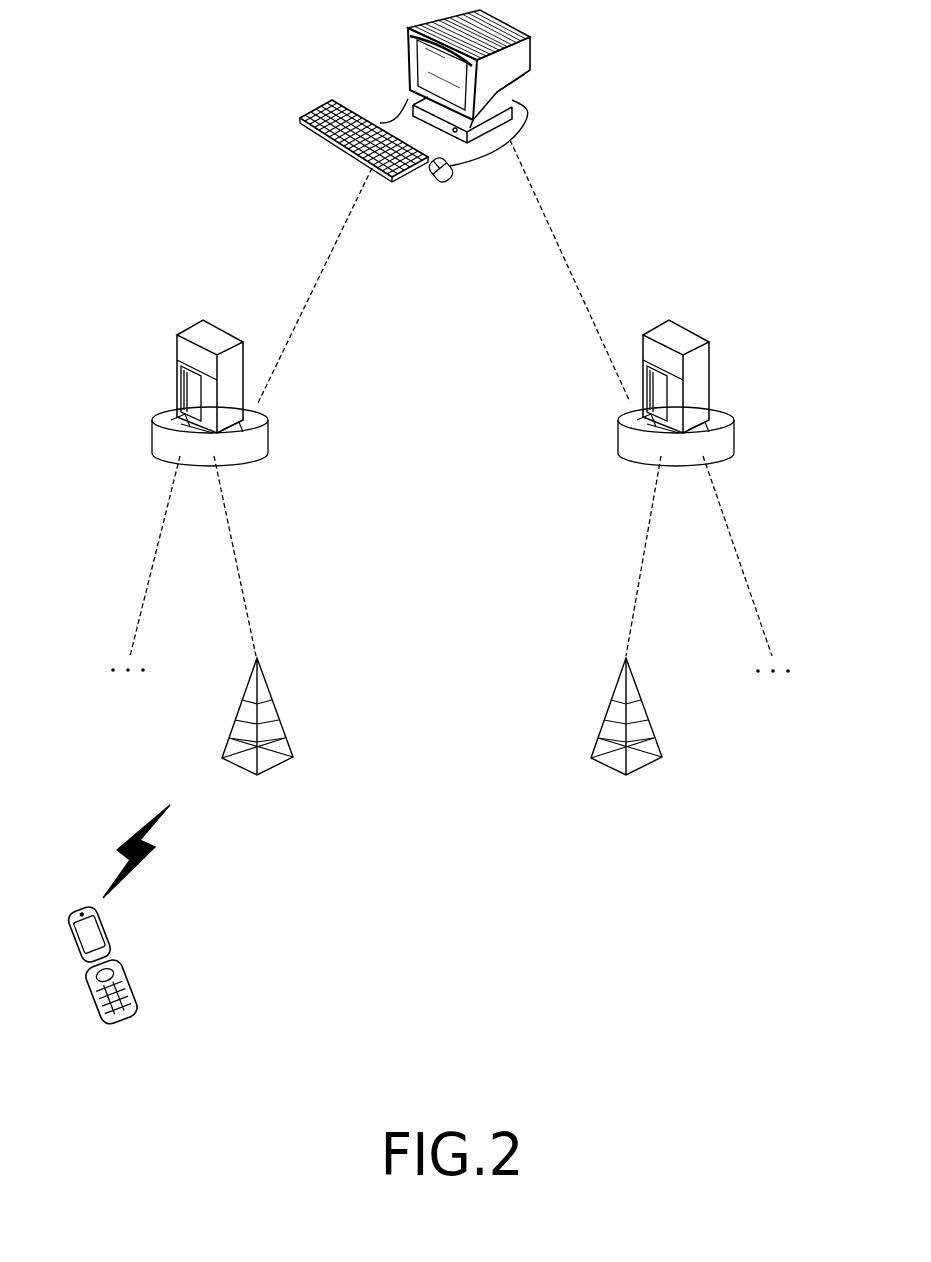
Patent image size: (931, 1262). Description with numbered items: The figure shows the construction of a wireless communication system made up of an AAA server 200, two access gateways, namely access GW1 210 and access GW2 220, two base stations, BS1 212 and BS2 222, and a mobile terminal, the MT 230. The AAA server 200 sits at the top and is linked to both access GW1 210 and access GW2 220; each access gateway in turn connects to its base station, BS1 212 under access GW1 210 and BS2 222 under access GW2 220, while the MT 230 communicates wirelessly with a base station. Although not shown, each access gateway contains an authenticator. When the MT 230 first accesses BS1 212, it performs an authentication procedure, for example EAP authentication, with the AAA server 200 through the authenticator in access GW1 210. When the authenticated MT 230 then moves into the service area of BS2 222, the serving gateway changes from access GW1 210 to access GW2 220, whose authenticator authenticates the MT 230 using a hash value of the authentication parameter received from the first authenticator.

The AAA server 200 is at (415, 129).
The access GW1 210 is at (211, 418).
The access GW2 220 is at (676, 418).
The BS1 212 is at (256, 736).
The BS2 222 is at (626, 736).
The MT 230 is at (116, 944).